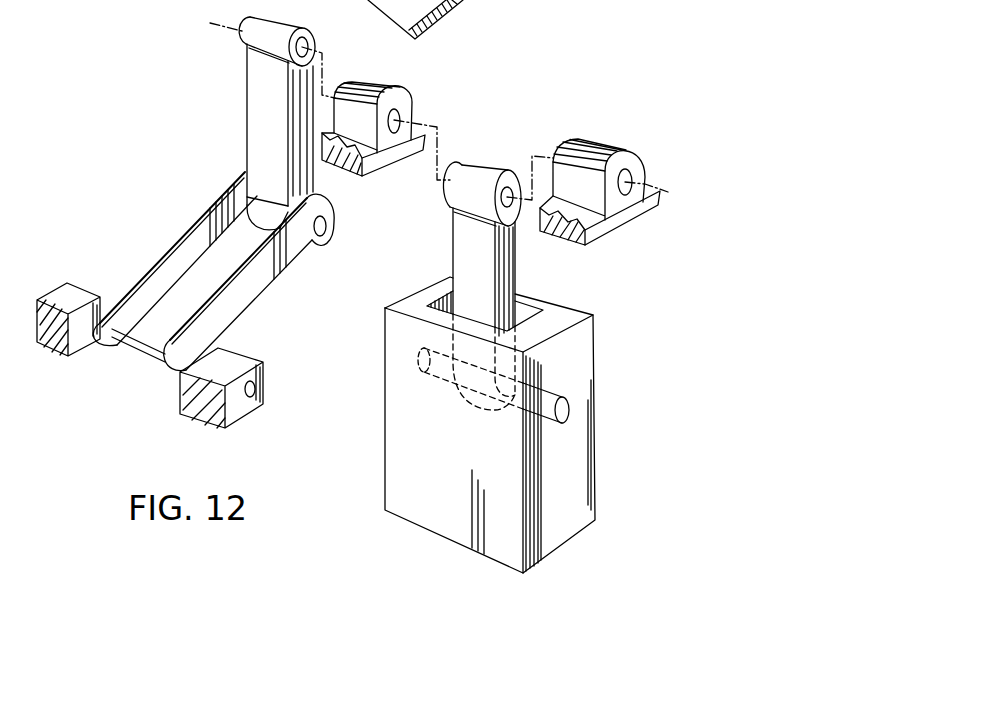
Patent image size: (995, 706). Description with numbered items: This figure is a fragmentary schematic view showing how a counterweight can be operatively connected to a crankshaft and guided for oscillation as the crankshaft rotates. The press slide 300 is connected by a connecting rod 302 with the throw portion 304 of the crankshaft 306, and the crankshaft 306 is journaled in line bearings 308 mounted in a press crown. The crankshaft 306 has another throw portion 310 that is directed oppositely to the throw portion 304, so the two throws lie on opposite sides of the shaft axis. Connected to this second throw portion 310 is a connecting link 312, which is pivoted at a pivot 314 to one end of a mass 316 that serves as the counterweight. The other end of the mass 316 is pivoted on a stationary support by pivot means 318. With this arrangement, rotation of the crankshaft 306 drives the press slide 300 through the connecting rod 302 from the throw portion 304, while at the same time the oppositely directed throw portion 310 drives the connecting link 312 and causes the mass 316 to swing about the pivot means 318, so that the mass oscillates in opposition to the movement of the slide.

The press slide 300 is at (591, 453).
The connecting rod 302 is at (514, 277).
The throw portion 304 is at (508, 198).
The crankshaft 306 is at (446, 125).
The line bearings 308 is at (605, 148).
The throw portion 310 is at (304, 44).
The connecting link 312 is at (250, 101).
The pivot 314 is at (327, 228).
The mass 316 is at (150, 272).
The pivot means 318 is at (143, 344).